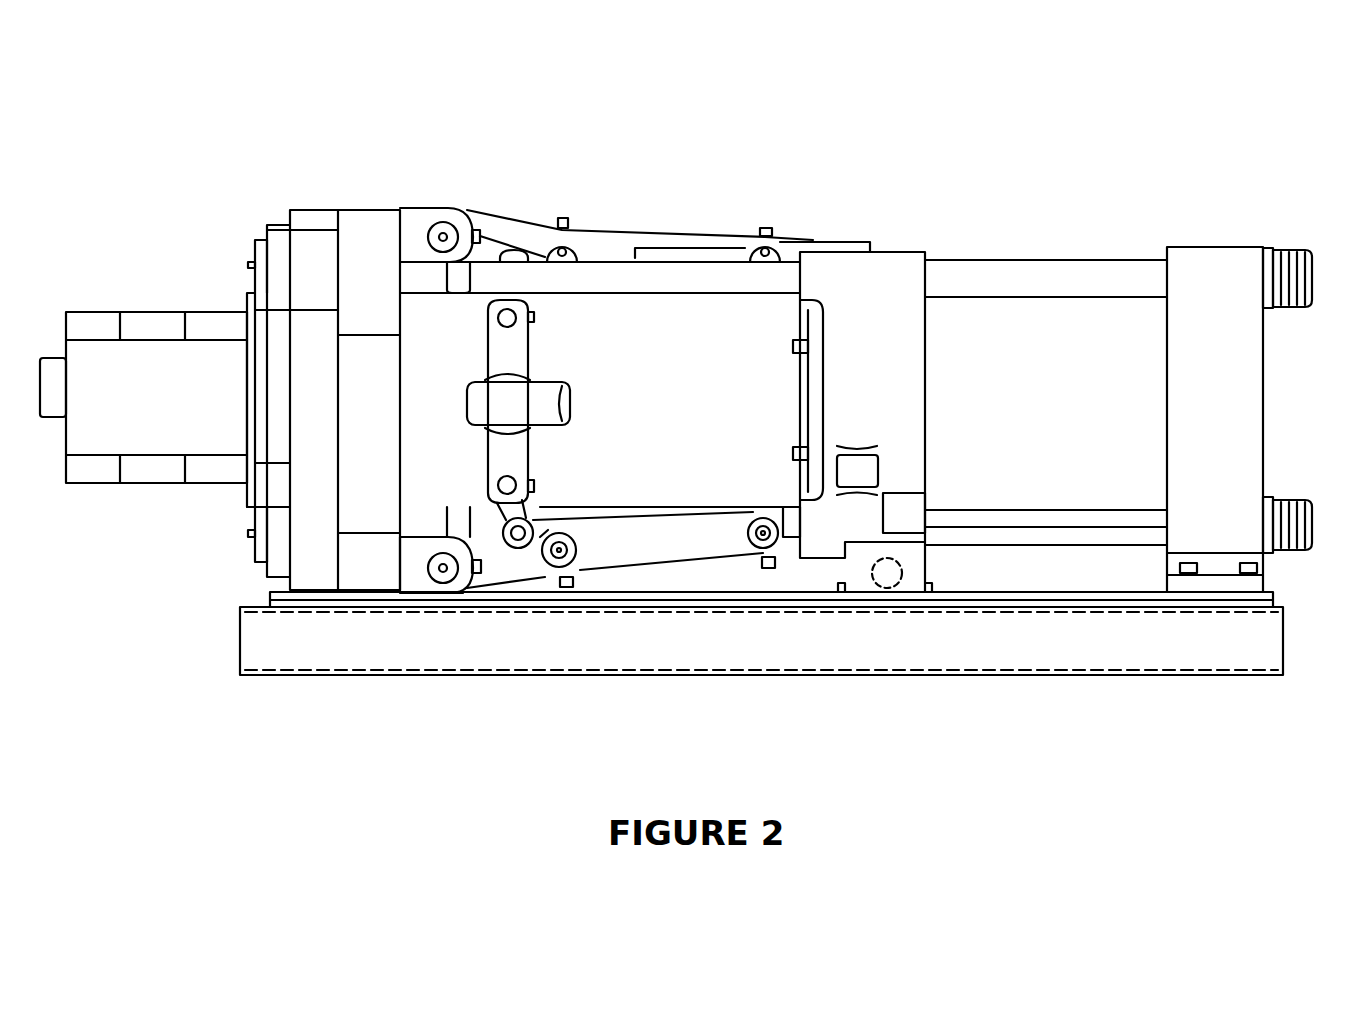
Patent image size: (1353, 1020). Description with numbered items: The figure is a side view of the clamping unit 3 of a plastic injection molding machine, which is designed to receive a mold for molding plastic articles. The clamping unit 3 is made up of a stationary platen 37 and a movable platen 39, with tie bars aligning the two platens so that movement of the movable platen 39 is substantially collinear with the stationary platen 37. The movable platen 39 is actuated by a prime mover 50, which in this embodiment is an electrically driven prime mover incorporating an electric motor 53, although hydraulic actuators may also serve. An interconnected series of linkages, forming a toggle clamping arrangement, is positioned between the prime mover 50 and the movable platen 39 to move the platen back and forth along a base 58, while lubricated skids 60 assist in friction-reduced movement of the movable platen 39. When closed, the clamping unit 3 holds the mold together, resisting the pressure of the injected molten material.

The clamping unit 3 is at (717, 142).
The stationary platen 37 is at (1212, 272).
The movable platen 39 is at (868, 273).
The prime mover 50 is at (118, 523).
The electric motor 53 is at (120, 370).
The base 58 is at (957, 640).
The lubricated skids 60 is at (1013, 597).